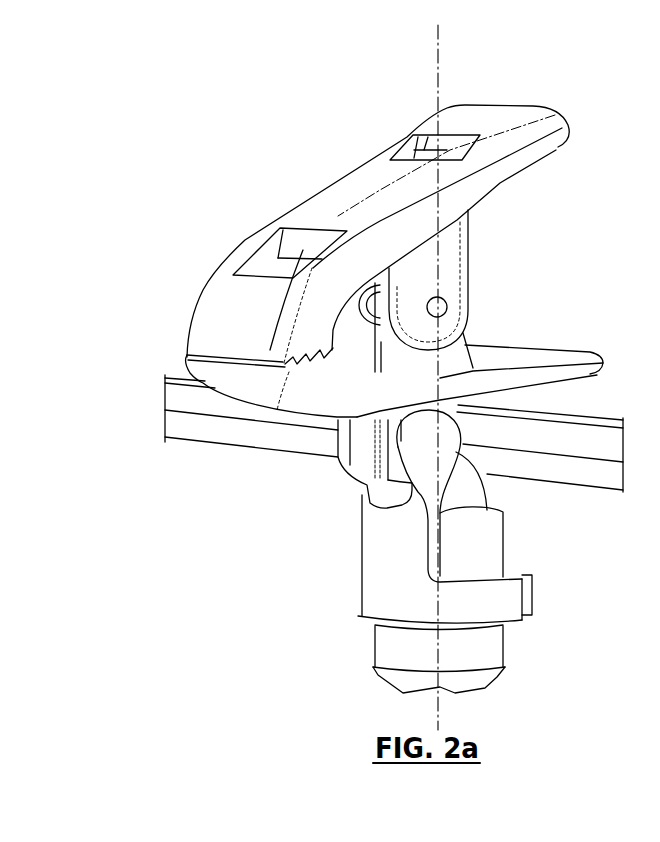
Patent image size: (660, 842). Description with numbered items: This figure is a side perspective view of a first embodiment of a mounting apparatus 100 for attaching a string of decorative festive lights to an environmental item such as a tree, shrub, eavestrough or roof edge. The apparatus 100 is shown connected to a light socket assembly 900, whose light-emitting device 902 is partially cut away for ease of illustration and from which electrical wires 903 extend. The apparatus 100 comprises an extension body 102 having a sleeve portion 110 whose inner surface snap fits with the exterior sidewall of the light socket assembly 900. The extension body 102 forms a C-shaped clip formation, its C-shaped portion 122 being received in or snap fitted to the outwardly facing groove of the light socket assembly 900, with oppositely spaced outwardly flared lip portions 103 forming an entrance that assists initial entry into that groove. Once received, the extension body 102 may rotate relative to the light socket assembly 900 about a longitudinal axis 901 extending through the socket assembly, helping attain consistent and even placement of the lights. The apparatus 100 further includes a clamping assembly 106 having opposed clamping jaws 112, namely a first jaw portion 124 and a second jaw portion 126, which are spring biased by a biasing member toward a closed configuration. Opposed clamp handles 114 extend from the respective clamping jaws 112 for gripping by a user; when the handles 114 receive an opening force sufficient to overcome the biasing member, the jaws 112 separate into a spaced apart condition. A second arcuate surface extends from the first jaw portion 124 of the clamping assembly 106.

The mounting apparatus 100 is at (203, 144).
The longitudinal axis 901 is at (438, 53).
The opposed clamp handles 114 is at (572, 130).
The opposed clamping jaws 112 is at (132, 318).
The second jaw portion 126 is at (191, 341).
The first jaw portion 124 is at (200, 370).
The clamping assembly 106 is at (470, 289).
The electrical wires 903 is at (243, 430).
The C-shaped portion 122 is at (367, 472).
The extension body 102 is at (361, 590).
The light socket assembly 900 is at (518, 560).
The oppositely spaced outwardly flared lip portions 103 is at (500, 607).
The sleeve portion 110 is at (513, 622).
The light-emitting device 902 is at (393, 678).